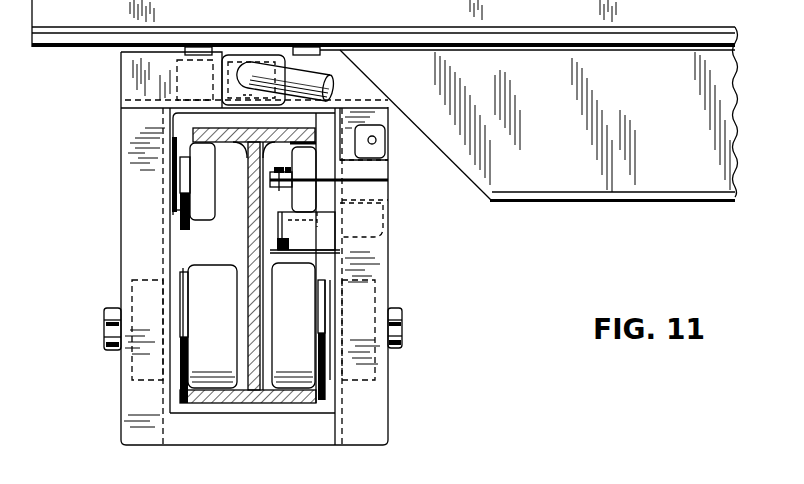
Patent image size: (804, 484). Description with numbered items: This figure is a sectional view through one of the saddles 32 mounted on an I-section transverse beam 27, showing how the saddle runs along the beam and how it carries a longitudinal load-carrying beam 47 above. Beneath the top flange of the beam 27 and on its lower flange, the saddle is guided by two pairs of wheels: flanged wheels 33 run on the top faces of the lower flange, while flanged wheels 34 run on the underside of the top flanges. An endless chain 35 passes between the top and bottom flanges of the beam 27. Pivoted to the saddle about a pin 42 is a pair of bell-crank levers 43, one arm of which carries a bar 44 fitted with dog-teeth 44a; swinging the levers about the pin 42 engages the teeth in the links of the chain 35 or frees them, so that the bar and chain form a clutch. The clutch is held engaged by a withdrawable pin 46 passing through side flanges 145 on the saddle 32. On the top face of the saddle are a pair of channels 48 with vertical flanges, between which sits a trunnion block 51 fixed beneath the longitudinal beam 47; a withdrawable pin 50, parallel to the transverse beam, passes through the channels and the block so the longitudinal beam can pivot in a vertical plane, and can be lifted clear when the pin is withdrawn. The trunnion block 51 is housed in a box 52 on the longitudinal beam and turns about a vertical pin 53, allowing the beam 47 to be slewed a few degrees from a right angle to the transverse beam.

The transverse beam 27 is at (252, 258).
The saddle 32 is at (102, 263).
The flanged wheels 33 is at (206, 370).
The flanged wheels 34 is at (205, 190).
The endless chain 35 is at (272, 172).
The pin 42 is at (373, 226).
The bell-crank levers 43 is at (373, 195).
The bar 44 is at (282, 222).
The dog-teeth 44a is at (282, 253).
The withdrawable pin 46 is at (378, 142).
The longitudinal load-carrying beam 47 is at (668, 106).
The channels 48 is at (128, 80).
The withdrawable pin 50 is at (315, 80).
The trunnion block 51 is at (246, 110).
The box 52 is at (214, 80).
The vertical pin 53 is at (250, 100).
The side flanges 145 is at (126, 135).